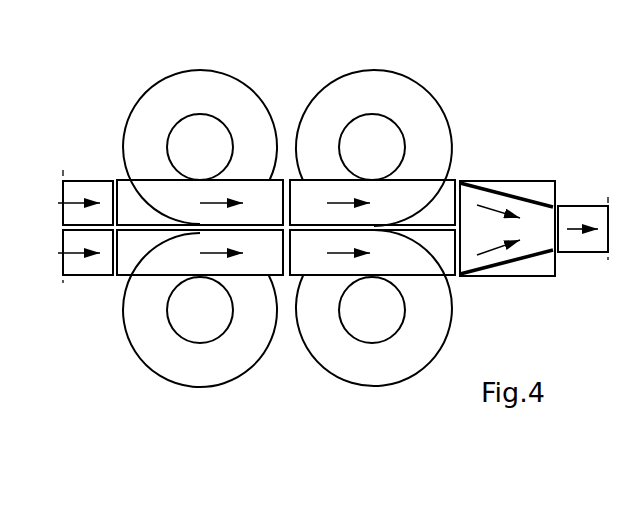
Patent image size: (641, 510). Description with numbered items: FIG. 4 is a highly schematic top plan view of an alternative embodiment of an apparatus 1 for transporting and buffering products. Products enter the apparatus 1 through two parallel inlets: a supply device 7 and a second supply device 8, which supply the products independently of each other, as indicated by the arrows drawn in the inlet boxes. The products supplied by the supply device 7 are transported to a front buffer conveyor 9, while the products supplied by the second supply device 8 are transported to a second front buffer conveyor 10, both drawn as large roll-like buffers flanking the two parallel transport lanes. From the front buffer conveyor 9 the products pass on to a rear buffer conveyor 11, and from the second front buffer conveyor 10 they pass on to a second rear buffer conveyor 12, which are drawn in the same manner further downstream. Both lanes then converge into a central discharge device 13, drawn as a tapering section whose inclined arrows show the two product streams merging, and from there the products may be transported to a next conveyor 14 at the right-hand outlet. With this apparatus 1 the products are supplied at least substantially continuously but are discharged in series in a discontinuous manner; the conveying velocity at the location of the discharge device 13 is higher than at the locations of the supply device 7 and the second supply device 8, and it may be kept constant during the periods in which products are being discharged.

The apparatus 1 is at (472, 36).
The supply device 7 is at (80, 187).
The second supply device 8 is at (87, 268).
The front buffer conveyor 9 is at (197, 77).
The second front buffer conveyor 10 is at (197, 373).
The rear buffer conveyor 11 is at (363, 77).
The second rear buffer conveyor 12 is at (378, 367).
The central discharge device 13 is at (523, 188).
The next conveyor 14 is at (582, 217).